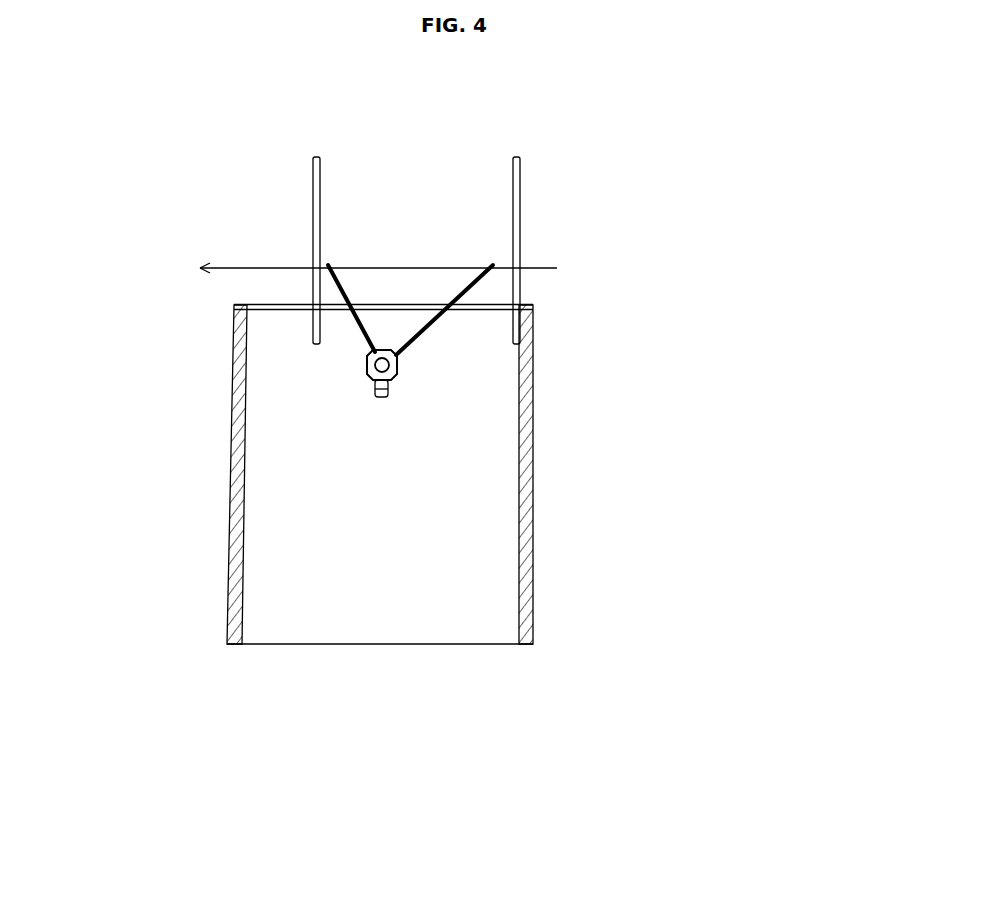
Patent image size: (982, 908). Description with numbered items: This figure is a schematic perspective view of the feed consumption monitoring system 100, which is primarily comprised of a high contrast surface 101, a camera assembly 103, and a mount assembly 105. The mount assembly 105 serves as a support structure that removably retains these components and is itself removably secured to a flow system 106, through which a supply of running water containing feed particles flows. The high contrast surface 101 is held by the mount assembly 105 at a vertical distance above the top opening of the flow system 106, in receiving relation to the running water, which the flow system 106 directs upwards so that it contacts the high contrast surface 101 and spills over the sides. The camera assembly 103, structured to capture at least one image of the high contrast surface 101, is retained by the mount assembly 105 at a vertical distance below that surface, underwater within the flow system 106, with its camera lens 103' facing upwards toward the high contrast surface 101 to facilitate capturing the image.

The feed consumption monitoring system 100 is at (438, 465).
The high contrast surface 101 is at (530, 305).
The camera assembly 103 is at (532, 384).
The camera lens 103' is at (527, 356).
The mount assembly 105 is at (313, 213).
The flow system 106 is at (520, 513).